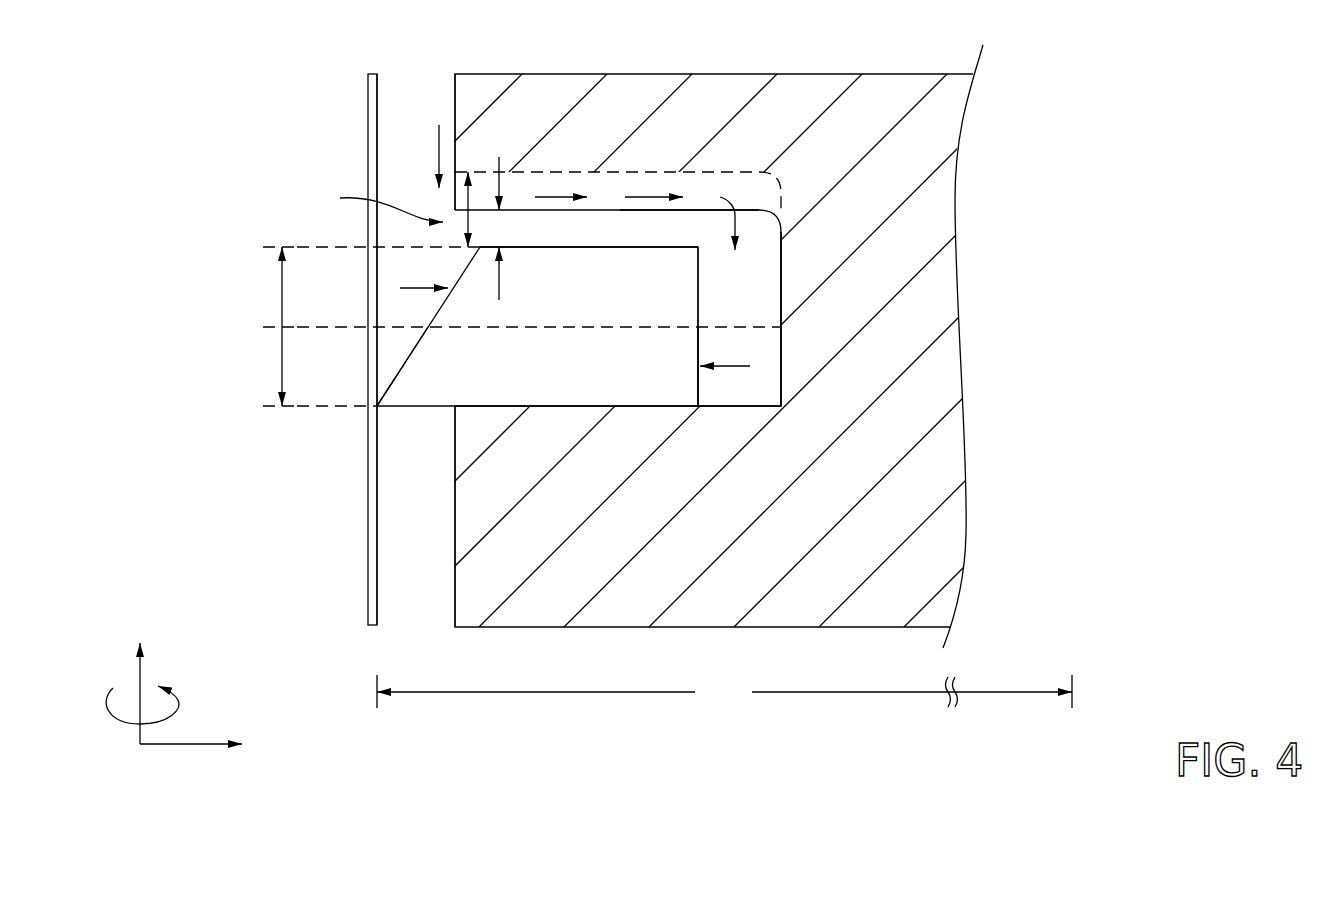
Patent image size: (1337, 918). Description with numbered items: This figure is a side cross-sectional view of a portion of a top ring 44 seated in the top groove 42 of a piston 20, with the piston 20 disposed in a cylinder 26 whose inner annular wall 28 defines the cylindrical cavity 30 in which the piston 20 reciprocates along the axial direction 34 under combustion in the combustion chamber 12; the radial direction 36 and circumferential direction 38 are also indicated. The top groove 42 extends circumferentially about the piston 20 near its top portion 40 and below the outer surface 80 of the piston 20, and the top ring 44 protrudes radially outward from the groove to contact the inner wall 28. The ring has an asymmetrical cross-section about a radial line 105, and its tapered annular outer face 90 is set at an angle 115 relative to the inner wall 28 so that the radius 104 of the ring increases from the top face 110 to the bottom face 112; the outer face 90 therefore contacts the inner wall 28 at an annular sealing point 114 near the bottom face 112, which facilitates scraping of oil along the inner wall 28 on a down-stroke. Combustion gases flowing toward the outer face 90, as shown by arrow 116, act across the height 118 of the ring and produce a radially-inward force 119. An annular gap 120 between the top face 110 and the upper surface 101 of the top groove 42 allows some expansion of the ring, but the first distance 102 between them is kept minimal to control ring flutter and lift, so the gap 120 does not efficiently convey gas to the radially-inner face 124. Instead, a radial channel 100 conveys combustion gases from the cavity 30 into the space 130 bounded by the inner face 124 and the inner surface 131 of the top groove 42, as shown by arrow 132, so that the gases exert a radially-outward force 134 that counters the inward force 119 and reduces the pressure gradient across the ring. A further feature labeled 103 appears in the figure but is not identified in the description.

The combustion chamber 12 is at (646, 33).
The piston 20 is at (1032, 88).
The cylinder 26 is at (368, 135).
The inner annular wall 28 is at (378, 118).
The cylindrical cavity 30 is at (418, 158).
The axial axis or direction 34 is at (138, 678).
The radial axis or direction 36 is at (185, 744).
The circumferential axis or direction 38 is at (175, 713).
The top portion 40 is at (675, 74).
The first annular groove 42 is at (376, 202).
The first ring 44 is at (440, 368).
The outer surface 80 is at (455, 86).
The tapered annular outer face 90 is at (437, 310).
The radial channel 100 is at (745, 190).
The upper surface 101 is at (650, 210).
The first distance 102 is at (500, 283).
The passage inlet 103 is at (470, 202).
The radius 104 is at (724, 691).
The radial line 105 is at (498, 330).
The top face 110 is at (515, 247).
The bottom face 112 is at (573, 406).
The annular sealing point 114 is at (377, 406).
The angle 115 is at (399, 372).
The arrow 116 is at (439, 170).
The height 118 is at (282, 290).
The radially-inward force 119 is at (405, 285).
The annular gap 120 is at (634, 241).
The radially-inner face 124 is at (700, 388).
The space 130 is at (744, 318).
The inner surface 131 is at (781, 290).
The arrow 132 is at (638, 195).
The radially-outward force 134 is at (720, 366).